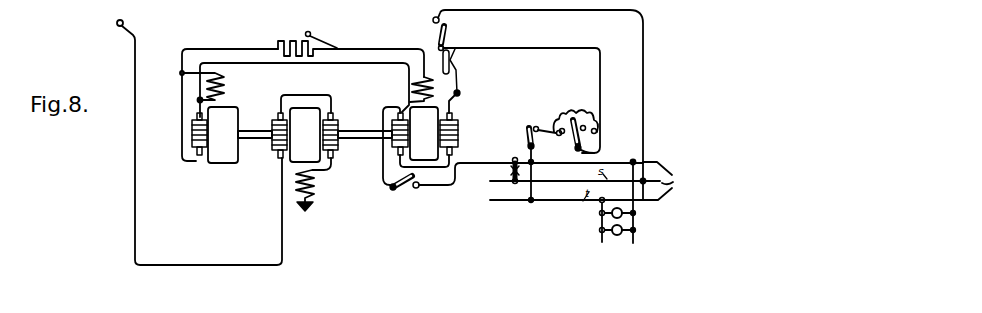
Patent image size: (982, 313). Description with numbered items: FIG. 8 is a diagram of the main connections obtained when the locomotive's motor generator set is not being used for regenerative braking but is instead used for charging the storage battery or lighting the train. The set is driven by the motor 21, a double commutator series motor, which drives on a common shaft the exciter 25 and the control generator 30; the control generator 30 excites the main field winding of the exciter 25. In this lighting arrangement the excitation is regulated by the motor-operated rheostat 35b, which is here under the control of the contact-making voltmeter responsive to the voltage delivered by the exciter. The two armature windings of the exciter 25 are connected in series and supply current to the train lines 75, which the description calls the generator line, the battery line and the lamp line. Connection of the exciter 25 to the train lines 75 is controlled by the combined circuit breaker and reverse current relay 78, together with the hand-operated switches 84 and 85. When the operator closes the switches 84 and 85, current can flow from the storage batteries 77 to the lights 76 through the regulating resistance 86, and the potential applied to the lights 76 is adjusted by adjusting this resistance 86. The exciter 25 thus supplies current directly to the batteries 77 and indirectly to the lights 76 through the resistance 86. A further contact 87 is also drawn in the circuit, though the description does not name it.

The motor-operated rheostat 35b is at (290, 40).
The control generator 30 is at (232, 135).
The motor 21 is at (332, 153).
The exciter 25 is at (420, 139).
The contact 87 is at (401, 192).
The hand-operated switch 84 is at (447, 33).
The combined circuit breaker and reverse current relay 78 is at (459, 77).
The hand-operated switch 85 is at (528, 134).
The regulating resistance 86 is at (576, 117).
The batteries 77 is at (512, 170).
The train lines 75 is at (589, 181).
The lights 76 is at (595, 225).